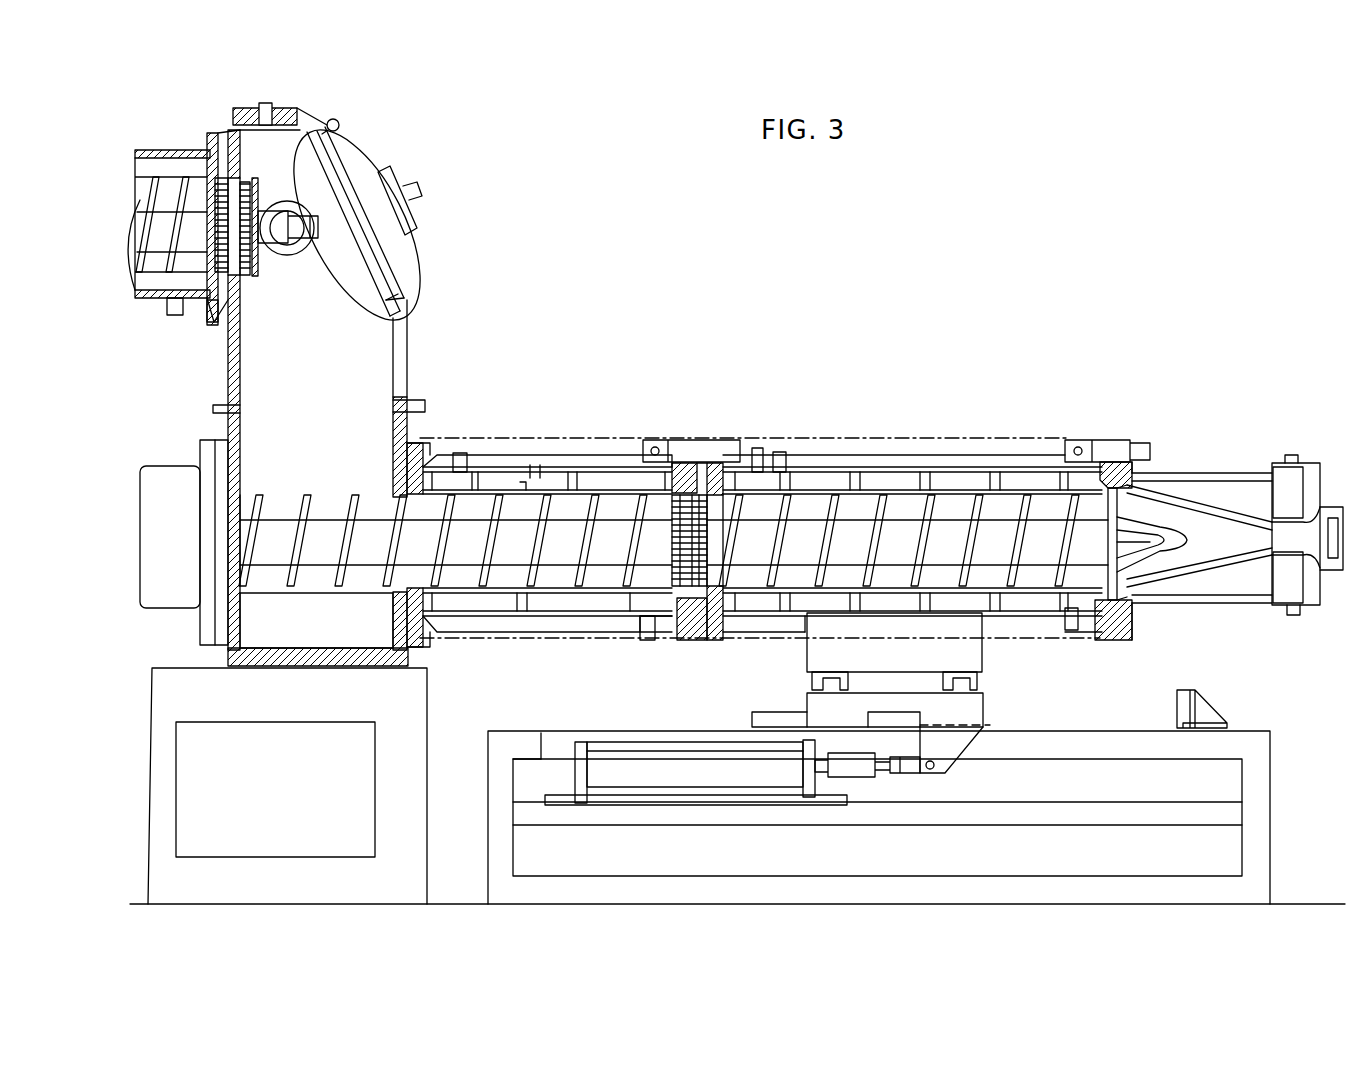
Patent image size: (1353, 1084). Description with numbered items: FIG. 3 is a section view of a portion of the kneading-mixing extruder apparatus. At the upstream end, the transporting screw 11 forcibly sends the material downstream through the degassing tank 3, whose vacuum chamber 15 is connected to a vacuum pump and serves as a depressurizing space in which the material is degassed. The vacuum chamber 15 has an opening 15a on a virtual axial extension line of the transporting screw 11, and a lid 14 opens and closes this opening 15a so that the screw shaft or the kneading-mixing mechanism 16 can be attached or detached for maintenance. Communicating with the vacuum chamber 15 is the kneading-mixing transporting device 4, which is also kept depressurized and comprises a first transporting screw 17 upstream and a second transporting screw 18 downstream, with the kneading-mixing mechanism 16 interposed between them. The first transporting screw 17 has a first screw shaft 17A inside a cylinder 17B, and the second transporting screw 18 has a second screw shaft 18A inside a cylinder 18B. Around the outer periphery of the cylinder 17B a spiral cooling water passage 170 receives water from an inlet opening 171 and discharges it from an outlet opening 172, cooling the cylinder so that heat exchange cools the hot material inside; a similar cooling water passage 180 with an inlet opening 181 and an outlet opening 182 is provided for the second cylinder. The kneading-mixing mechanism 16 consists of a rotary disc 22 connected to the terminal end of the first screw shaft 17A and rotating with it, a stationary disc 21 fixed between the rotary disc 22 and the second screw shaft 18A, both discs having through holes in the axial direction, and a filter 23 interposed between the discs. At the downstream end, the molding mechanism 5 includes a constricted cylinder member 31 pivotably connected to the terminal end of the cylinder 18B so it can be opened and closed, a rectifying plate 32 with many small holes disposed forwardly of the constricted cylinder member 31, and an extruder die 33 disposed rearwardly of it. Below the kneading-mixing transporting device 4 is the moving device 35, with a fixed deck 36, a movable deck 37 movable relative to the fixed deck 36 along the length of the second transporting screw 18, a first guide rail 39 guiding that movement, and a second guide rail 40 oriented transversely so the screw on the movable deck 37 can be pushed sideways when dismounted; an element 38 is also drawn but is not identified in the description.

The degassing tank 3 is at (385, 153).
The kneading-mixing transporting device 4 is at (1012, 350).
The molding mechanism 5 is at (1173, 400).
The transporting screw 11 is at (150, 240).
The lid 14 is at (407, 245).
The vacuum chamber 15 is at (352, 352).
The opening 15a is at (395, 272).
The kneading-mixing mechanism 16 is at (262, 272).
The first transporting screw 17 is at (553, 467).
The first transporting screw shaft 17A is at (503, 467).
The cylinder of the first transporting screw 17B is at (590, 467).
The second transporting screw 18 is at (897, 515).
The second transporting screw shaft 18A is at (953, 530).
The cylinder of the second transporting screw 18B is at (857, 470).
The stationary disc 21 is at (238, 217).
The rotary disc 22 is at (225, 300).
The filter 23 is at (234, 224).
The constricted cylinder member 31 is at (1198, 505).
The rectifying plate 32 is at (1133, 583).
The extruder die 33 is at (1318, 545).
The moving device 35 is at (1003, 677).
The fixed deck 36 is at (530, 730).
The movable deck 37 is at (985, 650).
The hydraulic cylinder 38 is at (627, 748).
The first guide rail 39 is at (1152, 710).
The second guide rail 40 is at (835, 676).
The cooling water passage 170 is at (533, 468).
The inlet opening 171 is at (463, 453).
The outlet opening 172 is at (695, 764).
The cooling water passage 180 is at (930, 480).
The inlet opening 181 is at (758, 452).
The outlet opening 182 is at (1071, 625).